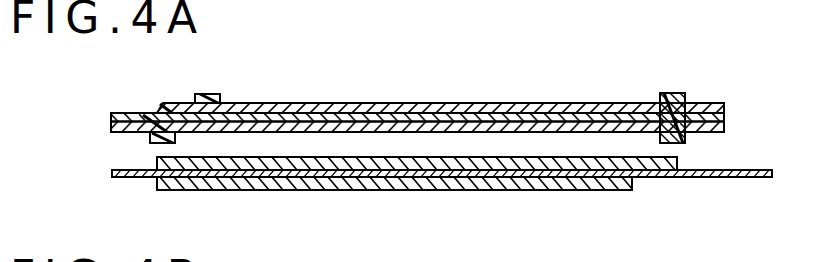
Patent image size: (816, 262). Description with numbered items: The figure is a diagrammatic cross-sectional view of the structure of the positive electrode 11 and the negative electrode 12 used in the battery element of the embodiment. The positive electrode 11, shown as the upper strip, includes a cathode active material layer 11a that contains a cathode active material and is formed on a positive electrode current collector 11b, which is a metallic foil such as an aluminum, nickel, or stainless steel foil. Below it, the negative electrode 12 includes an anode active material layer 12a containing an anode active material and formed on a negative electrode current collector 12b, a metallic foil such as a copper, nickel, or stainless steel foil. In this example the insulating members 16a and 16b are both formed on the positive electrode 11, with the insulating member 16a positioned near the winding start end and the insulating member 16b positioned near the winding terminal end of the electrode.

The positive electrode 11 is at (387, 57).
The cathode active material layer 11a is at (290, 108).
The positive electrode current collector 11b is at (363, 117).
The negative electrode 12 is at (393, 230).
The anode active material layer 12a is at (298, 182).
The negative electrode current collector 12b is at (366, 173).
The insulating member 16a is at (148, 122).
The insulating member 16b is at (724, 111).